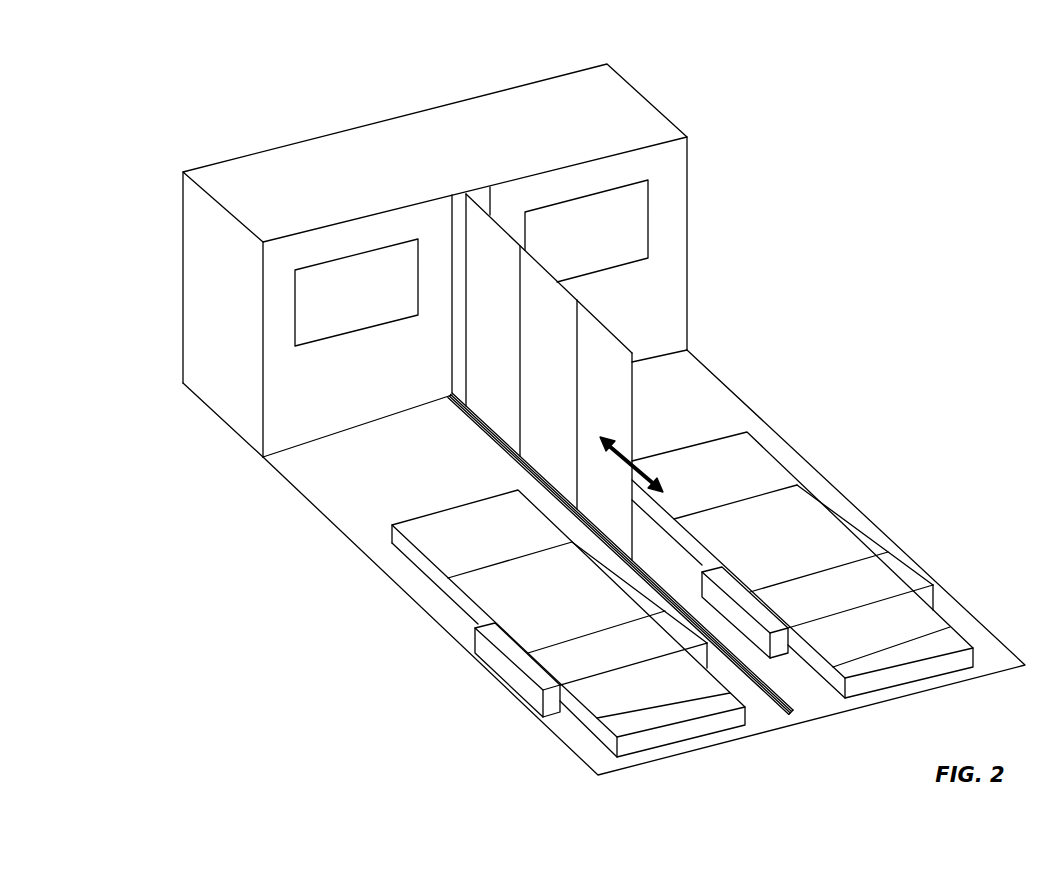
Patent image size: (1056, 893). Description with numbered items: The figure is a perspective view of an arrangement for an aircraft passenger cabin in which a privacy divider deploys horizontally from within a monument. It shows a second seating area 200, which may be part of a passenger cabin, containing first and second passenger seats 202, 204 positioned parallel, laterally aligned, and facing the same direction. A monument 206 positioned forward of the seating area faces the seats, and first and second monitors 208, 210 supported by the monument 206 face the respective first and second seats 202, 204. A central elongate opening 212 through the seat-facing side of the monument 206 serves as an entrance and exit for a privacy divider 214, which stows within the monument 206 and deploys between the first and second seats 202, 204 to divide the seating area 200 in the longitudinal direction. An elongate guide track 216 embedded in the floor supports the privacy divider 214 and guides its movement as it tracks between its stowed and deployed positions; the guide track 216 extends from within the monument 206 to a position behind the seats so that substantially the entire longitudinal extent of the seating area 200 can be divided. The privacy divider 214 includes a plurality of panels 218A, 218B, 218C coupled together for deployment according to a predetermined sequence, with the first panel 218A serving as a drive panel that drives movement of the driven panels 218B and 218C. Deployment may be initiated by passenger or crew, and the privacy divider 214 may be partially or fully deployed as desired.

The second seating area 200 is at (756, 374).
The first passenger seat 202 is at (558, 665).
The second passenger seat 204 is at (885, 600).
The monument 206 is at (607, 110).
The first monitor 208 is at (374, 305).
The second monitor 210 is at (618, 246).
The central elongate opening 212 is at (450, 204).
The privacy divider 214 is at (607, 377).
The elongate guide track 216 is at (773, 693).
The first panel 218A is at (631, 414).
The second panel 218B is at (522, 367).
The third panel 218C is at (468, 311).